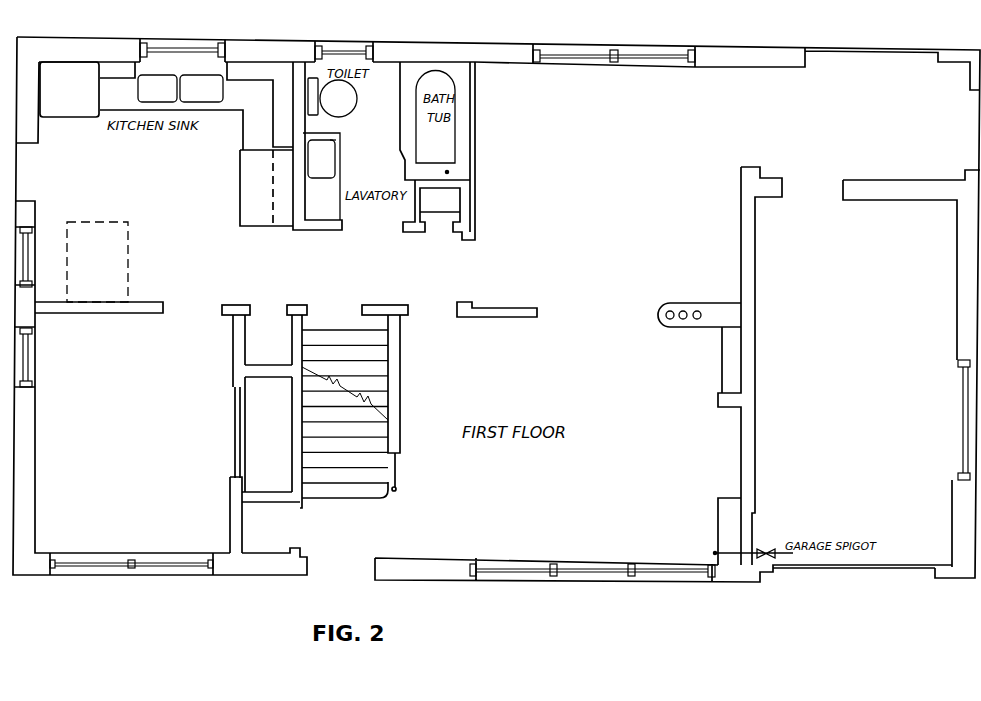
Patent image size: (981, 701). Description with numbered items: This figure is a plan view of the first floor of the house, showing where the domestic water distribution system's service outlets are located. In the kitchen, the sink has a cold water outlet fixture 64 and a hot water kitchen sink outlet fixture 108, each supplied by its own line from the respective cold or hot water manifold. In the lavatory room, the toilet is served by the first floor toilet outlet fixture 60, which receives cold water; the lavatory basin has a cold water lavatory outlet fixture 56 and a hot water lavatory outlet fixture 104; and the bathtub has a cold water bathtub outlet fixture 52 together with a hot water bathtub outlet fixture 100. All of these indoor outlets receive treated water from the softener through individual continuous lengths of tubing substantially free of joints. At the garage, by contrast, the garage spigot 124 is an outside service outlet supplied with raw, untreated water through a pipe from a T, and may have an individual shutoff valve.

The kitchen sink outlet fixture 108 is at (167, 72).
The cold water outlet fixture 64 is at (190, 72).
The first floor toilet outlet fixture 60 is at (312, 115).
The lavatory outlet fixture 104 is at (333, 143).
The lavatory outlet fixture 56 is at (308, 170).
The bathtub outlet fixture 100 is at (427, 172).
The bathtub outlet fixture 52 is at (447, 172).
The garage spigot 124 is at (788, 558).